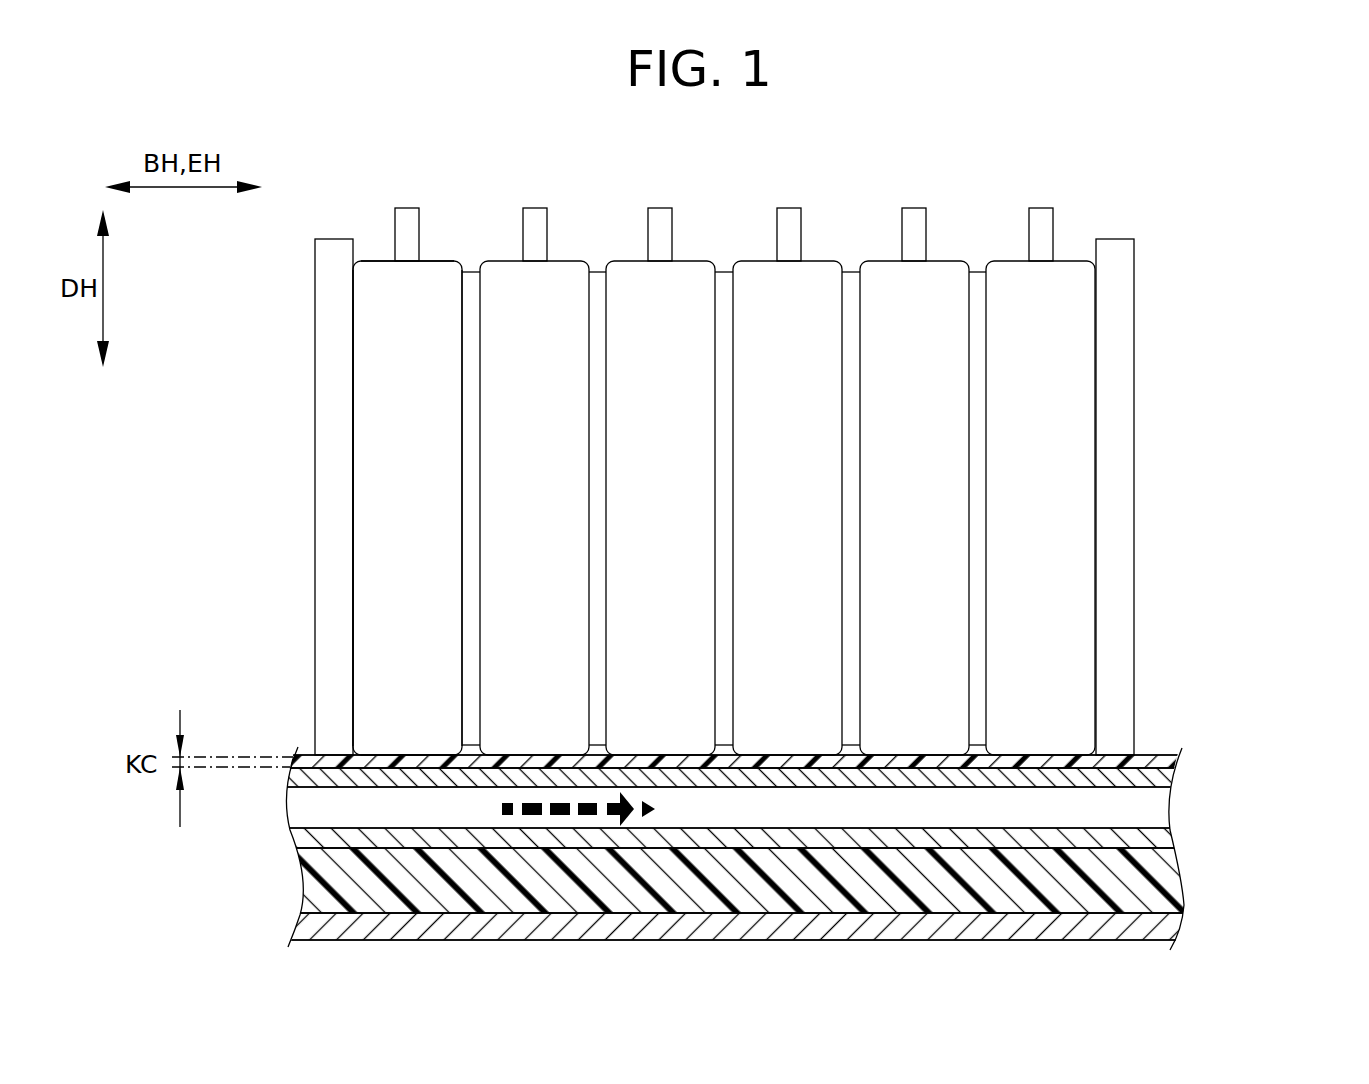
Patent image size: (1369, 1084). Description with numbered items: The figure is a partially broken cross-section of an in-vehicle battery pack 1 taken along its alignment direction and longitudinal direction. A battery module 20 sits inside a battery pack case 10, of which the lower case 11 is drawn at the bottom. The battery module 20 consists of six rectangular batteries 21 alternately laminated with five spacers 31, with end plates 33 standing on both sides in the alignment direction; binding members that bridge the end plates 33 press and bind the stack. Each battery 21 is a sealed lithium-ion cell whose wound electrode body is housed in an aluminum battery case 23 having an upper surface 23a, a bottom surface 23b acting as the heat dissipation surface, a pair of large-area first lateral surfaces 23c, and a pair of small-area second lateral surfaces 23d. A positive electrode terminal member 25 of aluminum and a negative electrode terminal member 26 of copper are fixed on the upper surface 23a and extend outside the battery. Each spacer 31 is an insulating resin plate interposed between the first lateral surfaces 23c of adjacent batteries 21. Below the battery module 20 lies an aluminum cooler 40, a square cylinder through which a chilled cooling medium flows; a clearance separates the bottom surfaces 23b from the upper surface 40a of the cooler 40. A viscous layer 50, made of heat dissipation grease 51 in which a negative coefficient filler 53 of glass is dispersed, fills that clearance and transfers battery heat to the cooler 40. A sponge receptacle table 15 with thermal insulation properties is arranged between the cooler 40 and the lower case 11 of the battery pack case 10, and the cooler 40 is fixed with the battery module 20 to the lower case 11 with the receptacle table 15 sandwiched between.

The battery pack 1 is at (1182, 212).
The battery module 20 is at (1142, 341).
The battery 21 is at (440, 272).
The battery case 23 is at (385, 462).
The upper surface 23a is at (368, 260).
The bottom surface 23b is at (420, 757).
The first lateral surface 23c is at (462, 505).
The second lateral surface 23d is at (385, 612).
The positive electrode terminal member 25 is at (408, 212).
The negative electrode terminal member 26 is at (532, 212).
The spacer 31 is at (470, 272).
The end plate 33 is at (322, 402).
The viscous layer 50 is at (1107, 755).
The heat dissipation grease 51 is at (735, 761).
The negative coefficient filler 53 is at (735, 761).
The cooler 40 is at (1157, 776).
The upper surface of cooler 40a is at (1157, 778).
The receptacle table 15 is at (1170, 887).
The battery pack case 10 is at (1172, 927).
The lower case 11 is at (735, 926).